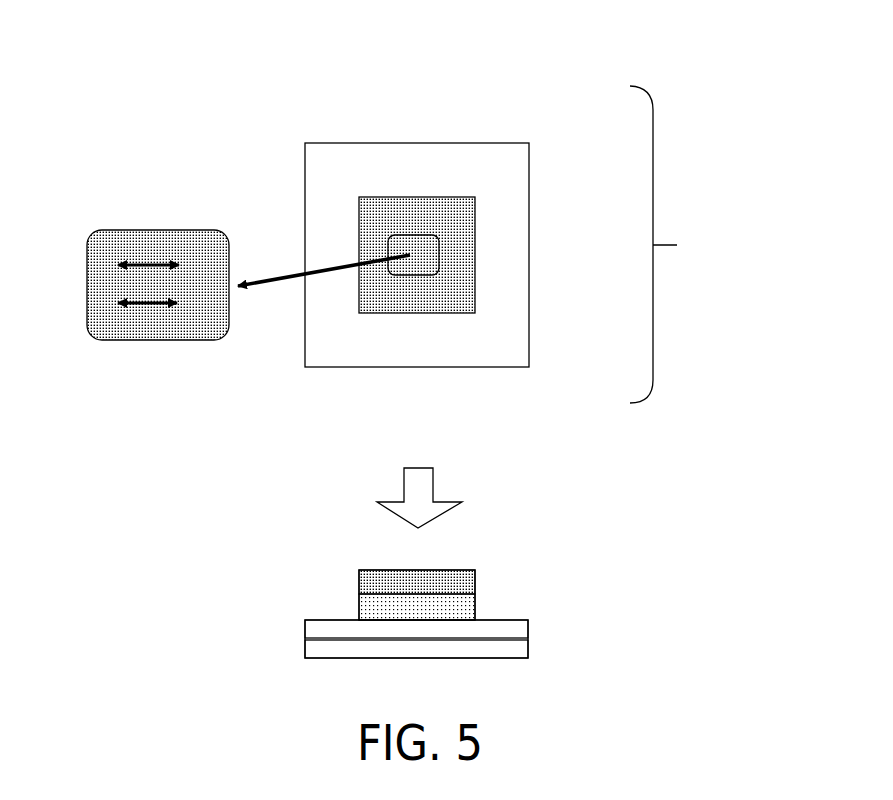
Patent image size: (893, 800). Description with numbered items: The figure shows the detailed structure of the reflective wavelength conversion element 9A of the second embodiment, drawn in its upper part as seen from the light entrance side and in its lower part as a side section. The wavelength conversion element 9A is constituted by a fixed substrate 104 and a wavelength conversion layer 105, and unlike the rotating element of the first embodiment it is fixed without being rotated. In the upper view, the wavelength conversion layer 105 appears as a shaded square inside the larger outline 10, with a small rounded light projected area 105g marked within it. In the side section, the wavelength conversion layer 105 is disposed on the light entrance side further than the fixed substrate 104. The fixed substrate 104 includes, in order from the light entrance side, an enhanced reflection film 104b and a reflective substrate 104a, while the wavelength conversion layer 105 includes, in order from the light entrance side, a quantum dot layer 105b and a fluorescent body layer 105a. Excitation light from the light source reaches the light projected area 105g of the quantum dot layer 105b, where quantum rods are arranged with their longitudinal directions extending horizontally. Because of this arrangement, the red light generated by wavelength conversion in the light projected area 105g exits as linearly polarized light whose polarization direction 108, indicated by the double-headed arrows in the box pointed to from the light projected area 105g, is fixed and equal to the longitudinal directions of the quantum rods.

The substrate / display panel 10 is at (424, 158).
The wavelength conversion layer 105 is at (455, 253).
The light projected area 105g is at (407, 276).
The polarization direction 108 is at (248, 285).
The wavelength conversion element 9A is at (673, 244).
The quantum dot layer 105b is at (448, 583).
The fluorescent body layer 105a is at (445, 608).
The fixed substrate 104 is at (218, 583).
The enhanced reflection film 104b is at (305, 630).
The reflective substrate 104a is at (305, 645).